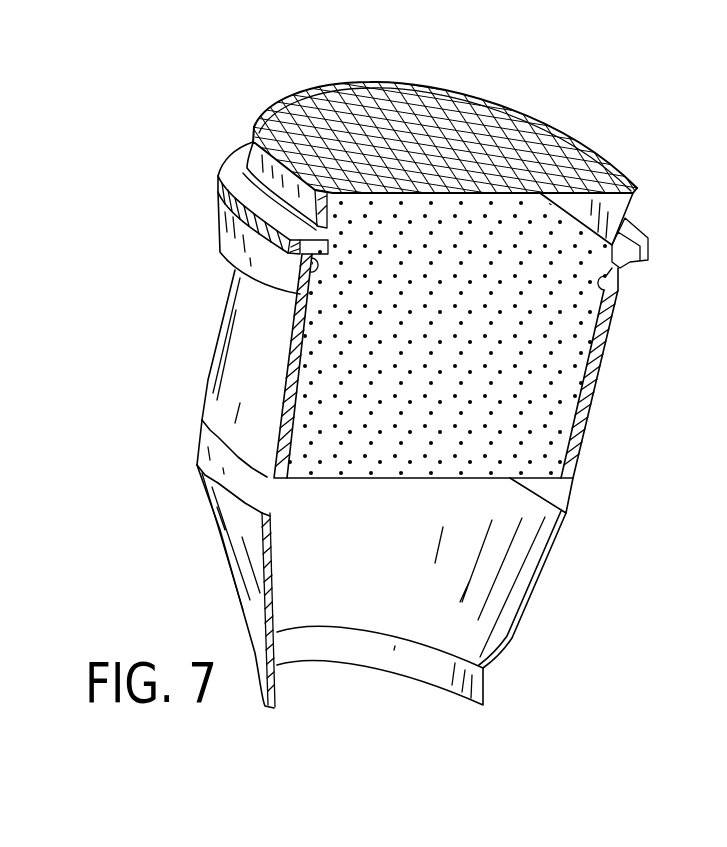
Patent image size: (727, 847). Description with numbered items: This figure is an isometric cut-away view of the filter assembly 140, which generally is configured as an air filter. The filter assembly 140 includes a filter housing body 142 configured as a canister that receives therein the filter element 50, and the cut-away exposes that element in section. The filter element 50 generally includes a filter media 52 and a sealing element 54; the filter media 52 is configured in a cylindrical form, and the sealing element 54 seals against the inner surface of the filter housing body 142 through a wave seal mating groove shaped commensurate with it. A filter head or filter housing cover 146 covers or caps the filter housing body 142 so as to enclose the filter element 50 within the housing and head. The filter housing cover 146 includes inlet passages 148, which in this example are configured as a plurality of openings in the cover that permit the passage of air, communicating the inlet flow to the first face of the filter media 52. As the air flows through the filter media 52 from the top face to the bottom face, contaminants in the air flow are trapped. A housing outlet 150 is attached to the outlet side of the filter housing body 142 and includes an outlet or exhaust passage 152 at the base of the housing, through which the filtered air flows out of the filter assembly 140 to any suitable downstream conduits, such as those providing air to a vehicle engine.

The filter assembly 140 is at (140, 235).
The filter housing body 142 is at (217, 390).
The filter housing cover 146 is at (250, 135).
The inlet passages 148 is at (386, 107).
The filter element 50 is at (548, 371).
The filter media 52 is at (570, 324).
The sealing element 54 is at (620, 271).
The housing outlet 150 is at (242, 552).
The exhaust passage 152 is at (467, 679).